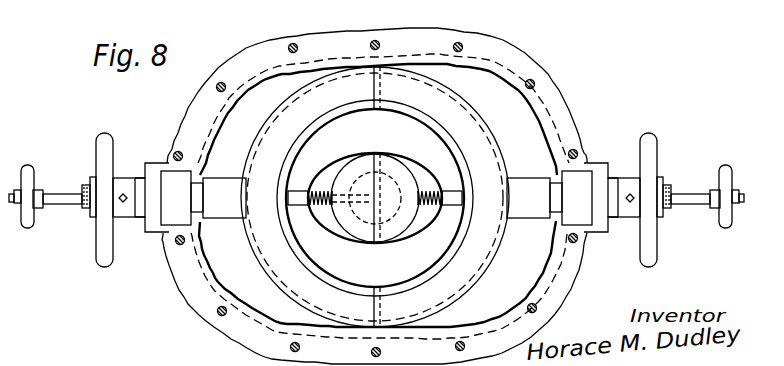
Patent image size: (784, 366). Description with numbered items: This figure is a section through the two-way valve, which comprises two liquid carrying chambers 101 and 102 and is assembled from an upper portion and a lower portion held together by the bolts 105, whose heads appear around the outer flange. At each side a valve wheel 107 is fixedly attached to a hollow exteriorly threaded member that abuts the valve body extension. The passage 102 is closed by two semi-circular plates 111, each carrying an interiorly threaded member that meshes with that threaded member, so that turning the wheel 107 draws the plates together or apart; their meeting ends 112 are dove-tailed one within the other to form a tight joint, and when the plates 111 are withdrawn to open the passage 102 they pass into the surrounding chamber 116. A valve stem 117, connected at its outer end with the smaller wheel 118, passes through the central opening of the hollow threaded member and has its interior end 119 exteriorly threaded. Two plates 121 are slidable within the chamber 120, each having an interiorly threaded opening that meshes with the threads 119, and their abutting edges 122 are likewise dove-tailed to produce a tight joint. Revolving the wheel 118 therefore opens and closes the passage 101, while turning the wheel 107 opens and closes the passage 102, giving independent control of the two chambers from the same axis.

The liquid carrying chamber 101 is at (394, 175).
The liquid carrying chamber 102 is at (488, 135).
The bolts 105 is at (527, 81).
The valve wheel 107 is at (648, 132).
The semi-circular plates 111 is at (336, 84).
The meeting ends 112 is at (376, 67).
The chamber 116 is at (533, 138).
The valve stem 117 is at (687, 193).
The wheel 118 is at (727, 164).
The exteriorly threaded interior end 119 is at (320, 197).
The chamber 120 is at (327, 218).
The plates 121 is at (405, 173).
The abutting edges 122 is at (377, 238).